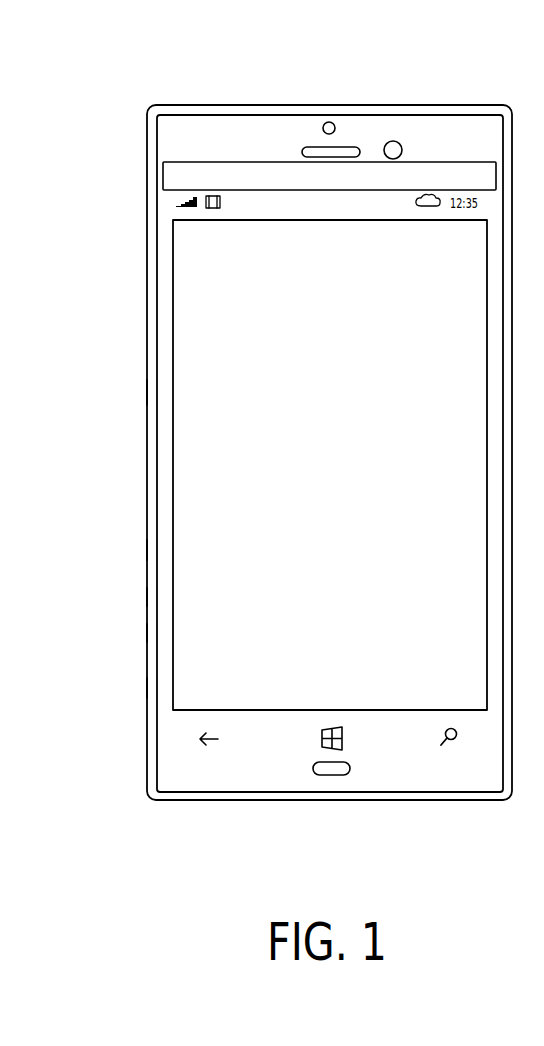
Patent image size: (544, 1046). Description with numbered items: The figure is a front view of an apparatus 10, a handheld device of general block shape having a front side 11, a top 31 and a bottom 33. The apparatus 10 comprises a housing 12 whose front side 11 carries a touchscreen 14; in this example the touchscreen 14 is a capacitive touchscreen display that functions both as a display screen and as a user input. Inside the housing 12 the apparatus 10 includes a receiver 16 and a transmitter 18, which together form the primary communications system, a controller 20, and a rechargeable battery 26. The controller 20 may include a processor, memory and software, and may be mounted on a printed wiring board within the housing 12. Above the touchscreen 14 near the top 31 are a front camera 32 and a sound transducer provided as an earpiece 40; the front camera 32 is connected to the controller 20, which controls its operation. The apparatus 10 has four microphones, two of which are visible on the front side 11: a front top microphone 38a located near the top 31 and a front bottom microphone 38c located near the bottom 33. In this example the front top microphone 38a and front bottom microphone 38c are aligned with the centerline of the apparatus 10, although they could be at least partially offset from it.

The apparatus 10 is at (112, 177).
The front side 11 is at (165, 322).
The housing 12 is at (147, 393).
The touchscreen 14 is at (208, 492).
The receiver 16 is at (147, 550).
The transmitter 18 is at (147, 597).
The controller 20 is at (147, 633).
The rechargeable battery 26 is at (147, 688).
The top 31 is at (270, 105).
The front camera 32 is at (402, 150).
The bottom 33 is at (417, 800).
The front top microphone 38a is at (328, 121).
The front bottom microphone 38c is at (318, 770).
The earpiece 40 is at (345, 147).